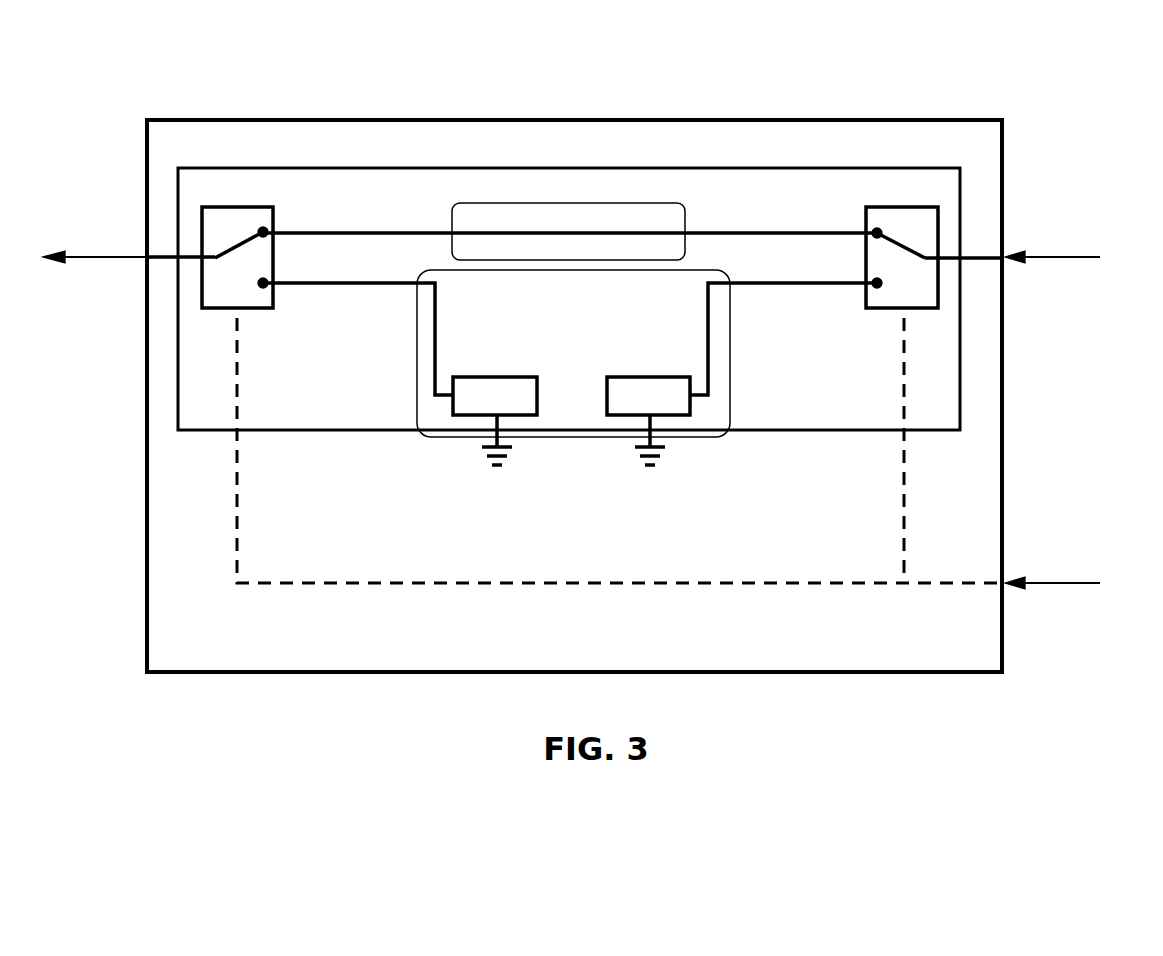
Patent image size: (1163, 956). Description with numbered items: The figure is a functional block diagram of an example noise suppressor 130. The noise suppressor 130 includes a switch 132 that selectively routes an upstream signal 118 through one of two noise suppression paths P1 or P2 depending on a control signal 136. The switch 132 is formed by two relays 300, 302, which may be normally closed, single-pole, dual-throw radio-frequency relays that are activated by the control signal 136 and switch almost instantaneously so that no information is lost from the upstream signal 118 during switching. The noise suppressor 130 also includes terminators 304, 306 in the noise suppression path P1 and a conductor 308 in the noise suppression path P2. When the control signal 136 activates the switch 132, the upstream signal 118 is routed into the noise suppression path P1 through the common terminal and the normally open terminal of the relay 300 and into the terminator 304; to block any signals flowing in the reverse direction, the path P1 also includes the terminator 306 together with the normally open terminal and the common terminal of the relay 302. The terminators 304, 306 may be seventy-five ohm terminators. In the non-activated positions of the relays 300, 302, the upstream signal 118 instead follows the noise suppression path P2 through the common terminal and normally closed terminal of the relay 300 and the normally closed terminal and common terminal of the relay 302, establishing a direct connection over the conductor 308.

The noise suppressor 130 is at (681, 662).
The switch 132 is at (965, 238).
The relay 300 is at (940, 233).
The relay 302 is at (200, 237).
The terminator 304 is at (662, 418).
The terminator 306 is at (460, 418).
The conductor 308 is at (570, 230).
The upstream signal 118 is at (1076, 347).
The control signal 136 is at (1034, 687).
The noise suppression path P1 is at (415, 378).
The noise suppression path P2 is at (683, 207).